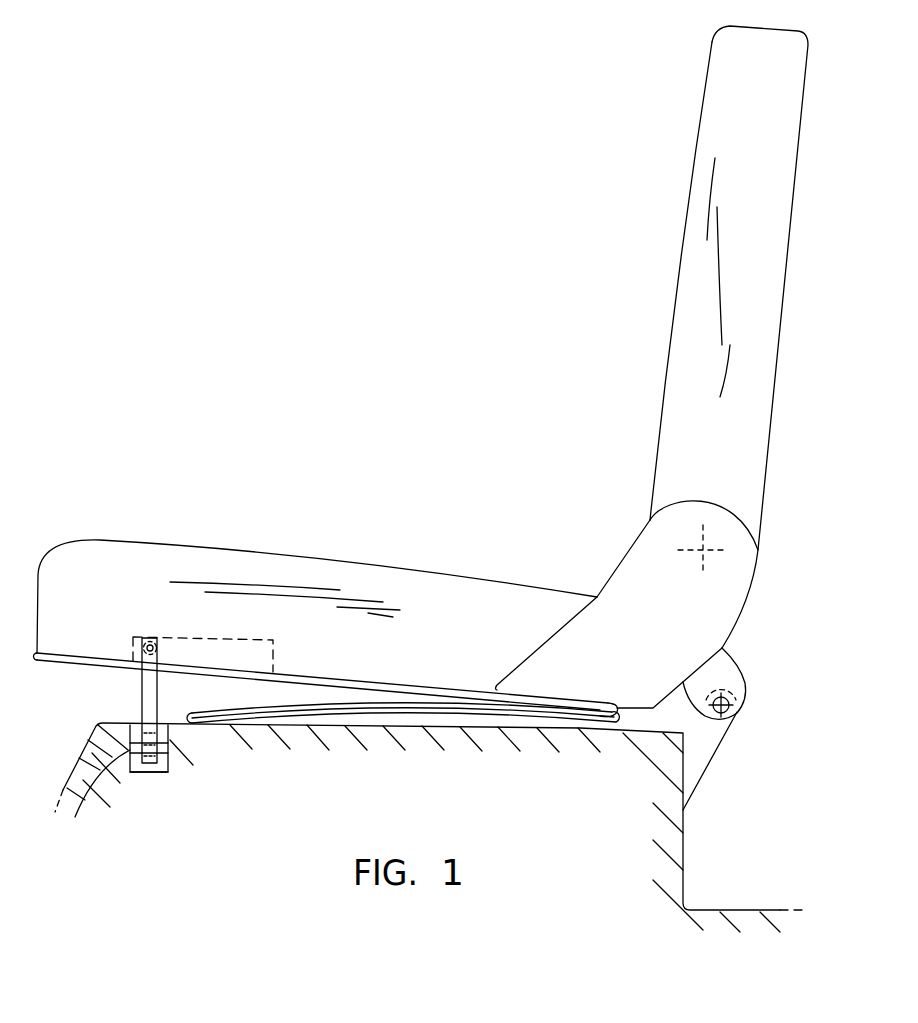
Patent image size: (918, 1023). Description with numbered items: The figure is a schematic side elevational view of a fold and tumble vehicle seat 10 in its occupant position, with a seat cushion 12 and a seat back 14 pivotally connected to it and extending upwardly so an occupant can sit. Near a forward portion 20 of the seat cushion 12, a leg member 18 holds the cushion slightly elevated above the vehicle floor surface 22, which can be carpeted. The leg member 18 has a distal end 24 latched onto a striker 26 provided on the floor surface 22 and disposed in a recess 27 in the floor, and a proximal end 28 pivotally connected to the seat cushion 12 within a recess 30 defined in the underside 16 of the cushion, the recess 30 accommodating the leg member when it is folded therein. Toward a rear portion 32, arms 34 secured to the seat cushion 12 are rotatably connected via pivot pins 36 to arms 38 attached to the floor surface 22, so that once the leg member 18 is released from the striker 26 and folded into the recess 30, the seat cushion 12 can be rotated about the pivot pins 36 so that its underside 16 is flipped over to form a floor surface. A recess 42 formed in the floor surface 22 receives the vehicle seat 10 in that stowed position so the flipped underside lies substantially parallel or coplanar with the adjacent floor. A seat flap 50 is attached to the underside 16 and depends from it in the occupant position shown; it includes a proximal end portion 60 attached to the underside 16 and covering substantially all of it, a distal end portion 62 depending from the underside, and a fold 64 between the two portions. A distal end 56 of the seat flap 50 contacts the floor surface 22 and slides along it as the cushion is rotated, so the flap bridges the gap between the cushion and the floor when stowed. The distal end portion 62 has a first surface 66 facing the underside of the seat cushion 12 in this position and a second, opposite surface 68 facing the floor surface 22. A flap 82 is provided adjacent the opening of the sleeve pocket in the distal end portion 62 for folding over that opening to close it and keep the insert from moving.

The vehicle seat 10 is at (440, 254).
The seat cushion 12 is at (323, 567).
The seat back 14 is at (683, 270).
The underside 16 is at (308, 681).
The leg member 18 is at (138, 693).
The forward portion 20 is at (48, 643).
The vehicle floor surface 22 is at (431, 776).
The distal end 24 is at (148, 773).
The striker 26 is at (83, 806).
The recess 27 is at (168, 769).
The proximal end 28 is at (133, 637).
The recess 30 is at (220, 651).
The rear portion 32 is at (722, 620).
The arms 34 is at (722, 668).
The pivot pins 36 is at (735, 703).
The arms 38 is at (707, 742).
The recess 42 is at (740, 910).
The seat flap 50 is at (403, 710).
The distal end 56 is at (195, 724).
The proximal end portion 60 is at (450, 698).
The distal end portion 62 is at (323, 700).
The fold 64 is at (618, 707).
The first surface 66 is at (368, 703).
The second surface 68 is at (363, 712).
The flap 82 is at (573, 726).